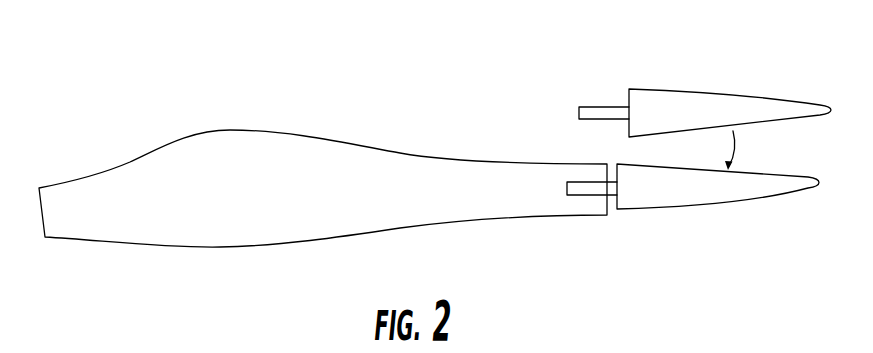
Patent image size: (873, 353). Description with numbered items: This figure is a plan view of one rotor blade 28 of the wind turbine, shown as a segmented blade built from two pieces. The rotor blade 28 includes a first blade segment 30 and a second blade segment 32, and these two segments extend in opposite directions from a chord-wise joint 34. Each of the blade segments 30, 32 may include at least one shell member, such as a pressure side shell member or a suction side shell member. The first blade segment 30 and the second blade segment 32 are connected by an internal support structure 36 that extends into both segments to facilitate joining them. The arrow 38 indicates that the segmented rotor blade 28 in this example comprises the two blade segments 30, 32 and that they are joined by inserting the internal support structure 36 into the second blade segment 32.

The rotor blade 28 is at (66, 80).
The first blade segment 30 is at (698, 100).
The second blade segment 32 is at (132, 235).
The chord-wise joint 34 is at (612, 207).
The internal support structure 36 is at (597, 110).
The arrow 38 is at (735, 142).